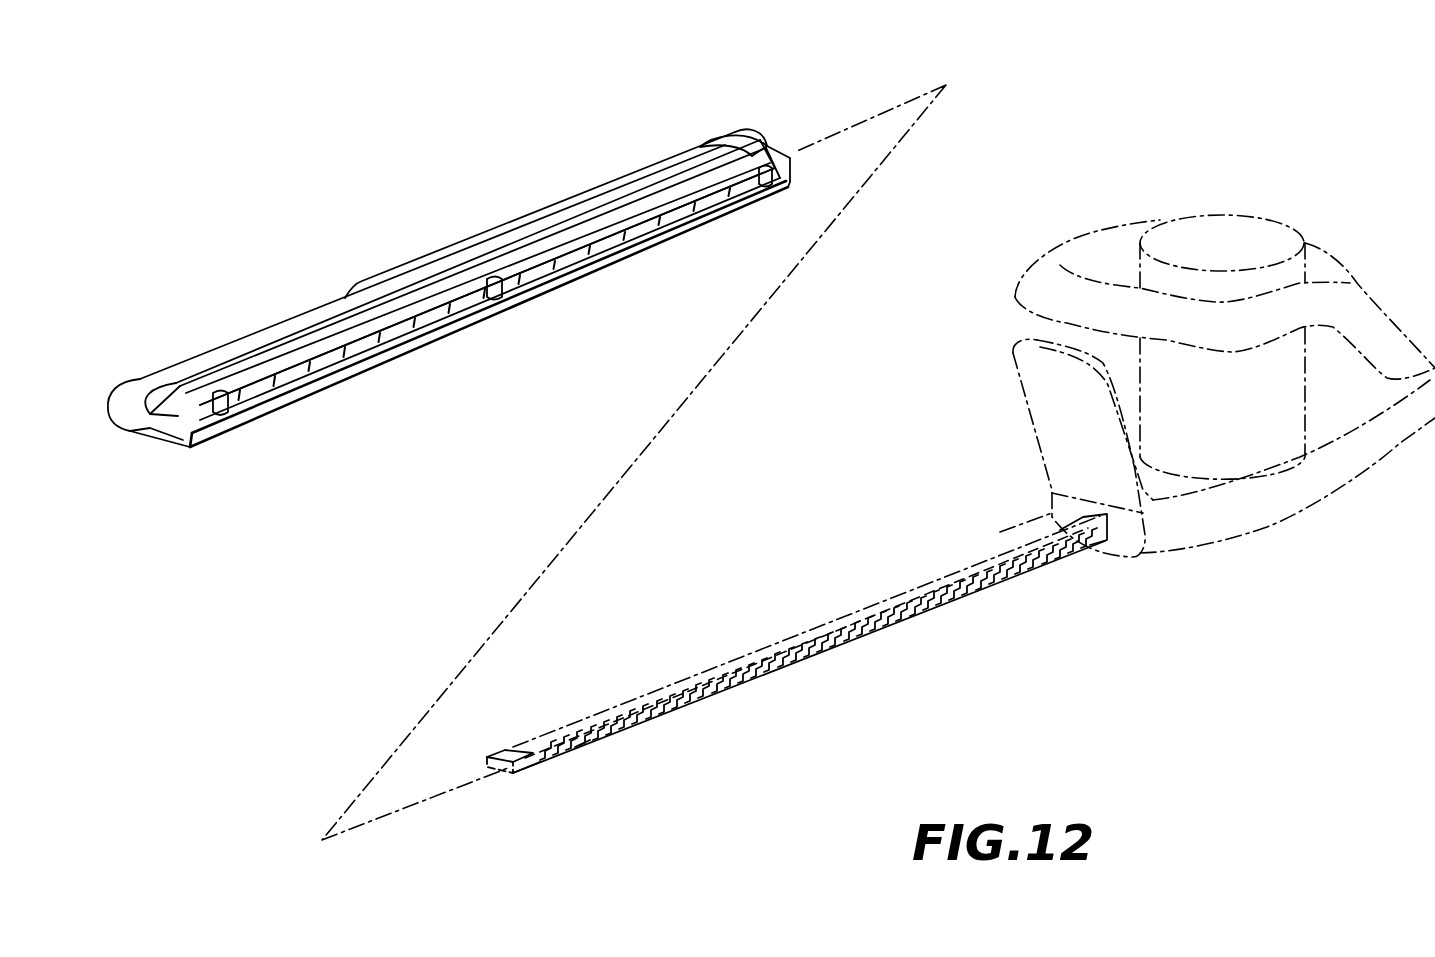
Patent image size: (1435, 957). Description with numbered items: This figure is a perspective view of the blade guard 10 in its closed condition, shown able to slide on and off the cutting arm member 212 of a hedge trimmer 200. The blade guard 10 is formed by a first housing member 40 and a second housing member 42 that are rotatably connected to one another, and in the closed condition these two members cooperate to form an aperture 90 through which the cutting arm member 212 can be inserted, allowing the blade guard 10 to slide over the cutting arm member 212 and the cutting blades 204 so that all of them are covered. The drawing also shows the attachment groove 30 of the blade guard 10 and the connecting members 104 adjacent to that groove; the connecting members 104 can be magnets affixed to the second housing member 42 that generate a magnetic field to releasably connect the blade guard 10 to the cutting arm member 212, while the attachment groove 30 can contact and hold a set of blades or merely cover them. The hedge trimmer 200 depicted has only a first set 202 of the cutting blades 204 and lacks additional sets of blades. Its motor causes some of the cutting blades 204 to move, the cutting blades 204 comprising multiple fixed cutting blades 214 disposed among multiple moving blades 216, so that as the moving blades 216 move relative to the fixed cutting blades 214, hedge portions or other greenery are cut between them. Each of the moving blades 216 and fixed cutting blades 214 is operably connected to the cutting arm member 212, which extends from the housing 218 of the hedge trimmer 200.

The blade guard 10 is at (338, 192).
The attachment groove 30 is at (184, 446).
The first housing member 40 is at (155, 405).
The second housing member 42 is at (152, 432).
The aperture 90 is at (775, 141).
The connecting members 104 is at (610, 262).
The hedge trimmer 200 is at (1246, 414).
The first set of cutting blades 202 is at (773, 663).
The cutting blades 204 is at (962, 586).
The cutting arm member 212 is at (508, 752).
The fixed cutting blades 214 is at (543, 770).
The moving blades 216 is at (584, 741).
The housing 218 is at (1213, 549).